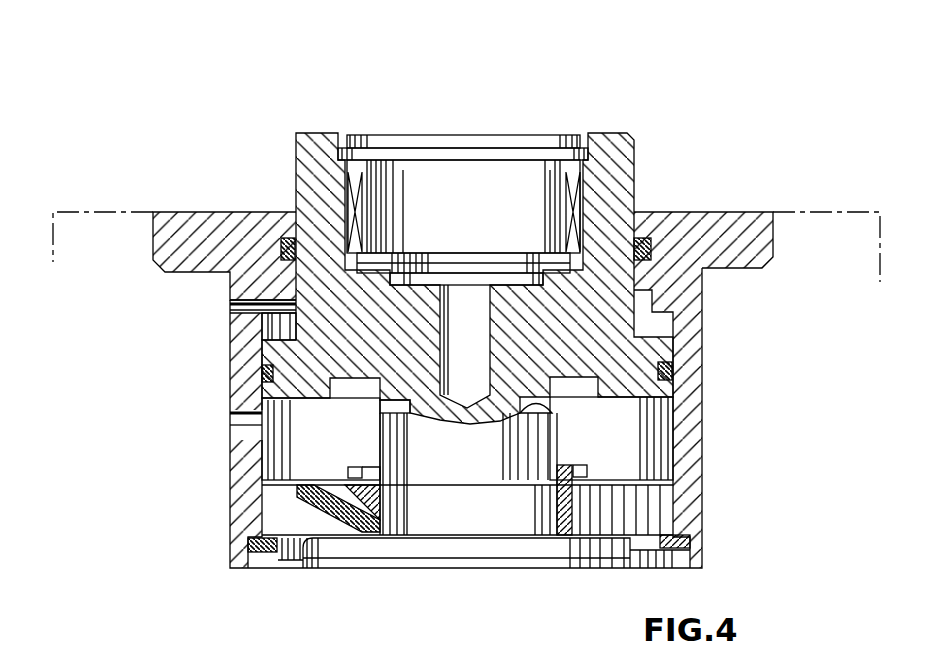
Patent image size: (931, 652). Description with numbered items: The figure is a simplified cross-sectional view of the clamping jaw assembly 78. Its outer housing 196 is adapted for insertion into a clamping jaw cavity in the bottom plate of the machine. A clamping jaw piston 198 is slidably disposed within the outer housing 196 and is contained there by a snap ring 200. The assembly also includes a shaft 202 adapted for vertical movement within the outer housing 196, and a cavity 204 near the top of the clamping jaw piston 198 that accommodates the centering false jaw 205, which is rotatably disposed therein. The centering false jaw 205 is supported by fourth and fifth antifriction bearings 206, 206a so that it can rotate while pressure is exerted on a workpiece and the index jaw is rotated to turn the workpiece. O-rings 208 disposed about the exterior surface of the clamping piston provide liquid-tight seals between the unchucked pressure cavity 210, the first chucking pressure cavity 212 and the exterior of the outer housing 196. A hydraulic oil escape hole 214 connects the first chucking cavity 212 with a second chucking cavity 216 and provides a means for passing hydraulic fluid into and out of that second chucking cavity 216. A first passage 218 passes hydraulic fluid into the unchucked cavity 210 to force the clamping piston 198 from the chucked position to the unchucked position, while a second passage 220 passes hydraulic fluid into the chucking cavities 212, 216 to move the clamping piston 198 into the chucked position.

The clamping jaw assembly 78 is at (418, 582).
The outer housing 196 is at (690, 427).
The clamping jaw piston 198 is at (646, 181).
The snap ring 200 is at (247, 545).
The shaft 202 is at (606, 140).
The cavity 204 is at (425, 120).
The centering false jaw 205 is at (473, 185).
The fourth antifriction bearing 206 is at (573, 212).
The fifth antifriction bearing 206a is at (377, 260).
The O-rings 208 is at (279, 252).
The unchucked pressure cavity 210 is at (262, 320).
The first chucking pressure cavity 212 is at (303, 448).
The hydraulic oil escape hole 214 is at (350, 497).
The second chucking cavity 216 is at (488, 517).
The first passage 218 is at (228, 306).
The second passage 220 is at (243, 429).